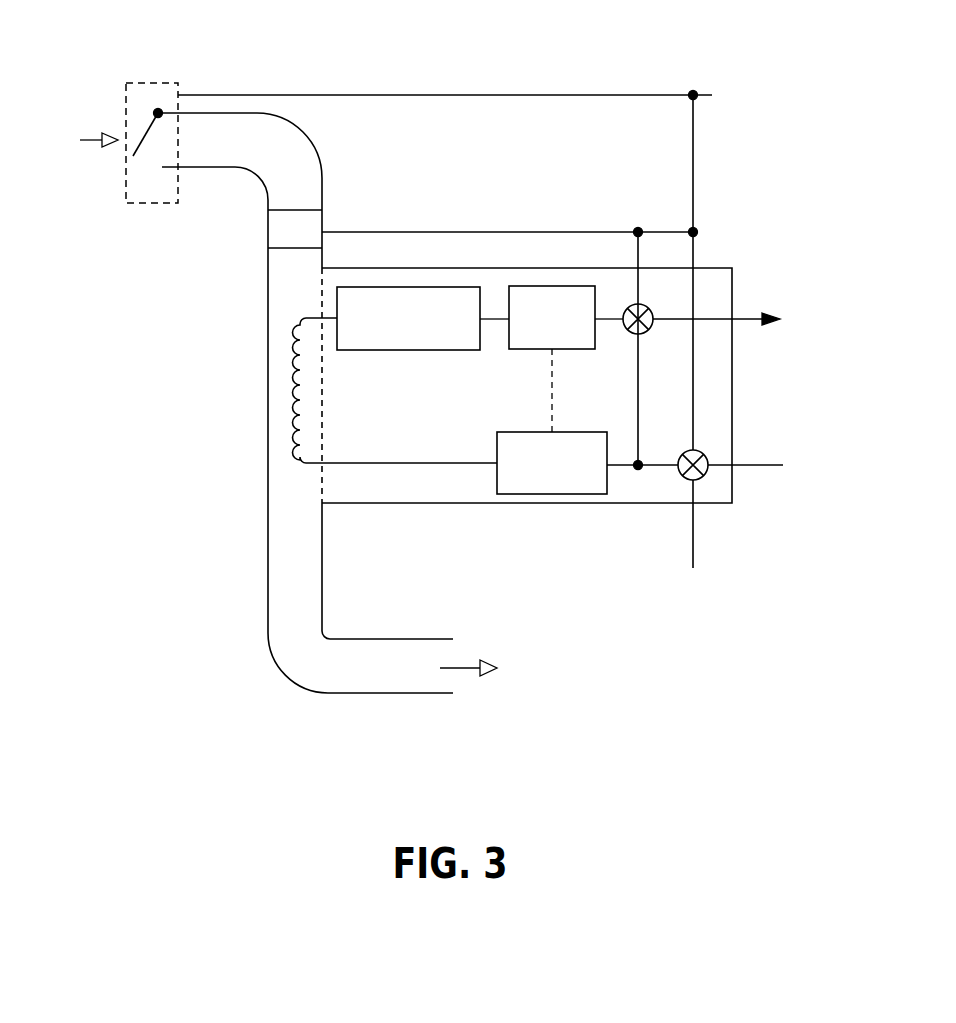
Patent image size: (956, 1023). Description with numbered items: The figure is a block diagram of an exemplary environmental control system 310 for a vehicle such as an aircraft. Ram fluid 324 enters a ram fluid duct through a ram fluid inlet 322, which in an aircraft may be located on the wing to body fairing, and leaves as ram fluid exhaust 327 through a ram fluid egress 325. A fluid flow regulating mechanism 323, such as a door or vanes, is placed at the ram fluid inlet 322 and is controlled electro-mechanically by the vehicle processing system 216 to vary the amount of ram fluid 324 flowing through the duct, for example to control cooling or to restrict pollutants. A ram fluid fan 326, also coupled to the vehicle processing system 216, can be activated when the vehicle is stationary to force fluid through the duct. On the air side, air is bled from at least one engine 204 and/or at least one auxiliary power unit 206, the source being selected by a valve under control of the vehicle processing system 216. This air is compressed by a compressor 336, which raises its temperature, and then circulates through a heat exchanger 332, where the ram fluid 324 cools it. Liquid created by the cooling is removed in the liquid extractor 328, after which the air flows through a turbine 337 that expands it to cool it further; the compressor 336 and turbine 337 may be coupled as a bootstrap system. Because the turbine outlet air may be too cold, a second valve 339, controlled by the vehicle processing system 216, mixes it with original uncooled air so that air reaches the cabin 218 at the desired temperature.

The environmental control system 310 is at (126, 749).
The vehicle processing system 216 is at (781, 130).
The cabin 218 is at (806, 340).
The engine 204 is at (813, 498).
The auxiliary power unit 206 is at (680, 643).
The ram fluid inlet 322 is at (143, 162).
The fluid flow regulating mechanism 323 is at (150, 83).
The ram fluid 324 is at (65, 173).
The ram fluid egress 325 is at (430, 695).
The ram fluid fan 326 is at (268, 230).
The ram fluid exhaust 327 is at (523, 718).
The liquid extractor 328 is at (394, 340).
The heat exchanger 332 is at (295, 415).
The compressor 336 is at (538, 485).
The turbine 337 is at (538, 340).
The second valve 339 is at (653, 328).